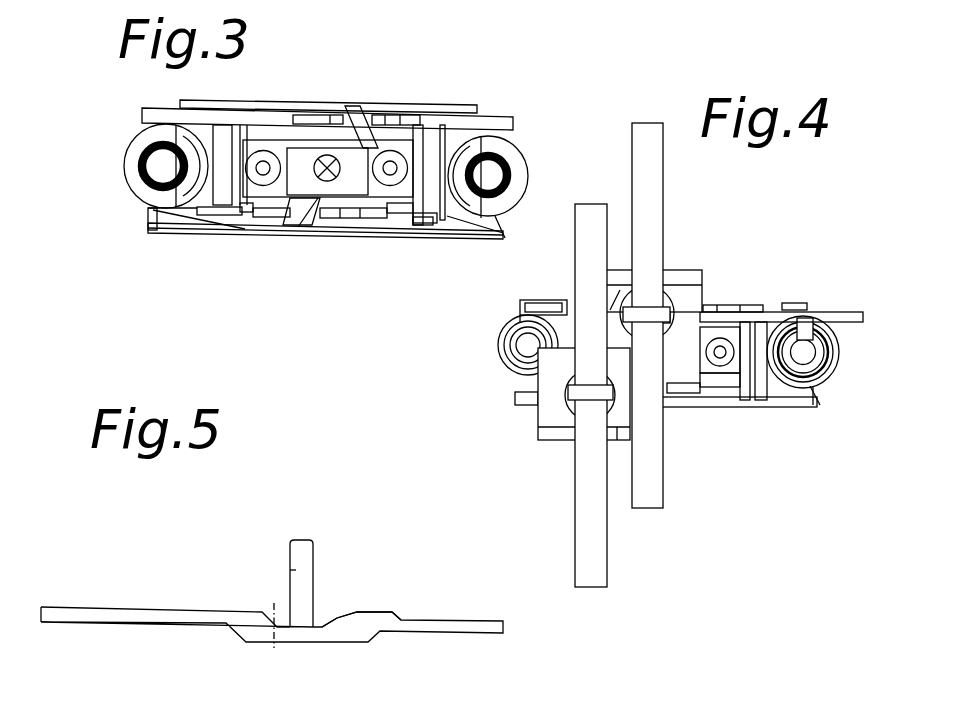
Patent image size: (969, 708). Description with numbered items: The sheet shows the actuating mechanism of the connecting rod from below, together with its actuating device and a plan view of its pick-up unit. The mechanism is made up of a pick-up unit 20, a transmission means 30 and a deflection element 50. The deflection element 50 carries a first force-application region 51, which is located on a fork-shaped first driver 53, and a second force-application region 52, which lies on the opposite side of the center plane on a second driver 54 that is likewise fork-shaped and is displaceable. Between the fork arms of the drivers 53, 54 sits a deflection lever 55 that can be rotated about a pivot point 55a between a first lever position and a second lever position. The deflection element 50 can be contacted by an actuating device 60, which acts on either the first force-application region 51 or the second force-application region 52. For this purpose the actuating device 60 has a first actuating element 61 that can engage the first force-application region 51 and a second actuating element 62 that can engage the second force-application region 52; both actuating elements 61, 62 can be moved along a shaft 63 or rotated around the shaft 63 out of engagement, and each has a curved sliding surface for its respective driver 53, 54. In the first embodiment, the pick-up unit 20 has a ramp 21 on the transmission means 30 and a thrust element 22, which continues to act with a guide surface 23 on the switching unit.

In FIG. 5, the pick-up unit 20 is at (343, 654).
In FIG. 5, the ramp 21 is at (334, 616).
In FIG. 5, the thrust element 22 is at (300, 563).
In FIG. 5, the guide surface 23 is at (249, 570).
In FIG. 3, the transmission means 30 is at (492, 117).
In FIG. 4, the transmission means 30 is at (805, 312).
In FIG. 5, the transmission means 30 is at (235, 618).
In FIG. 3, the deflection element 50 is at (368, 204).
In FIG. 3, the first force-application region 51 is at (307, 104).
In FIG. 3, the second force-application region 52 is at (245, 222).
In FIG. 3, the first driver 53 is at (443, 102).
In FIG. 3, the second driver 54 is at (331, 216).
In FIG. 3, the deflection lever 55 is at (293, 235).
In FIG. 3, the pivot point 55a is at (390, 106).
In FIG. 4, the actuating device 60 is at (622, 286).
In FIG. 4, the first actuating element 61 is at (675, 302).
In FIG. 4, the second actuating element 62 is at (557, 417).
In FIG. 4, the shaft 63 is at (647, 483).